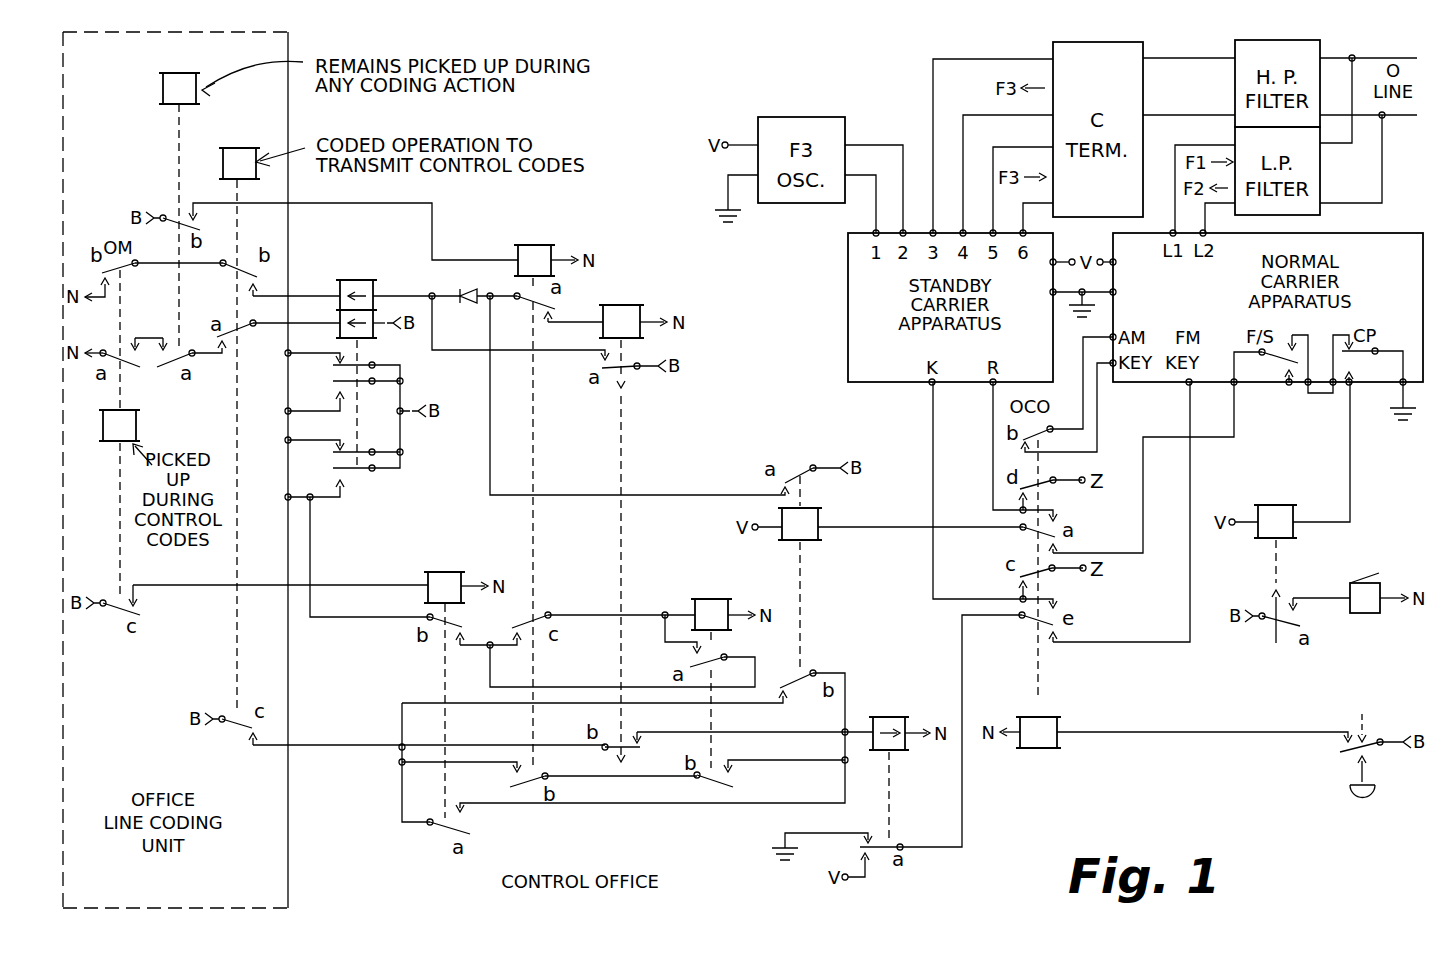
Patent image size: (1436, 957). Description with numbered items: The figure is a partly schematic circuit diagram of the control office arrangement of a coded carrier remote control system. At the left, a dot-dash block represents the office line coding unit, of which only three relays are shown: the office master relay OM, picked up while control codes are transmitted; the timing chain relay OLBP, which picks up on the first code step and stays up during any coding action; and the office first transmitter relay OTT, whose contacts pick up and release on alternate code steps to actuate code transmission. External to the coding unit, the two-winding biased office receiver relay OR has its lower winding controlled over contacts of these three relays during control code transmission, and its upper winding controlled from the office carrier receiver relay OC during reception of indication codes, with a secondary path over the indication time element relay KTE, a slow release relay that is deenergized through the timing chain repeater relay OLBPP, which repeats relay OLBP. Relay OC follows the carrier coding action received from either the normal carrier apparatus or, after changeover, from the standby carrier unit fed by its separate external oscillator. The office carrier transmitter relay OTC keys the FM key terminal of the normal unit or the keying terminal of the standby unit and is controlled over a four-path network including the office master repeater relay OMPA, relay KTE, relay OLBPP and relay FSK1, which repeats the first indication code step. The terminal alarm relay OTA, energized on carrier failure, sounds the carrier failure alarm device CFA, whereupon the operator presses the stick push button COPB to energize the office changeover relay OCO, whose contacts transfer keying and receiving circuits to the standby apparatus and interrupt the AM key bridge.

The timing chain relay OLBP is at (178, 197).
The office first transmitter relay OTT is at (239, 417).
The office master relay OM is at (119, 434).
The office receiver relay OR is at (356, 362).
The timing chain repeater relay OLBPP is at (532, 495).
The indication time element relay KTE is at (621, 520).
The office carrier receiver relay OC is at (800, 554).
The office master repeater relay OMPA is at (445, 682).
The first indication step repeater relay FSK1 is at (712, 670).
The office carrier transmitter relay OTC is at (889, 766).
The office changeover relay OCO is at (1038, 594).
The terminal alarm relay OTA is at (1275, 561).
The carrier failure alarm device CFA is at (1365, 581).
The changeover push button COPB is at (1367, 744).